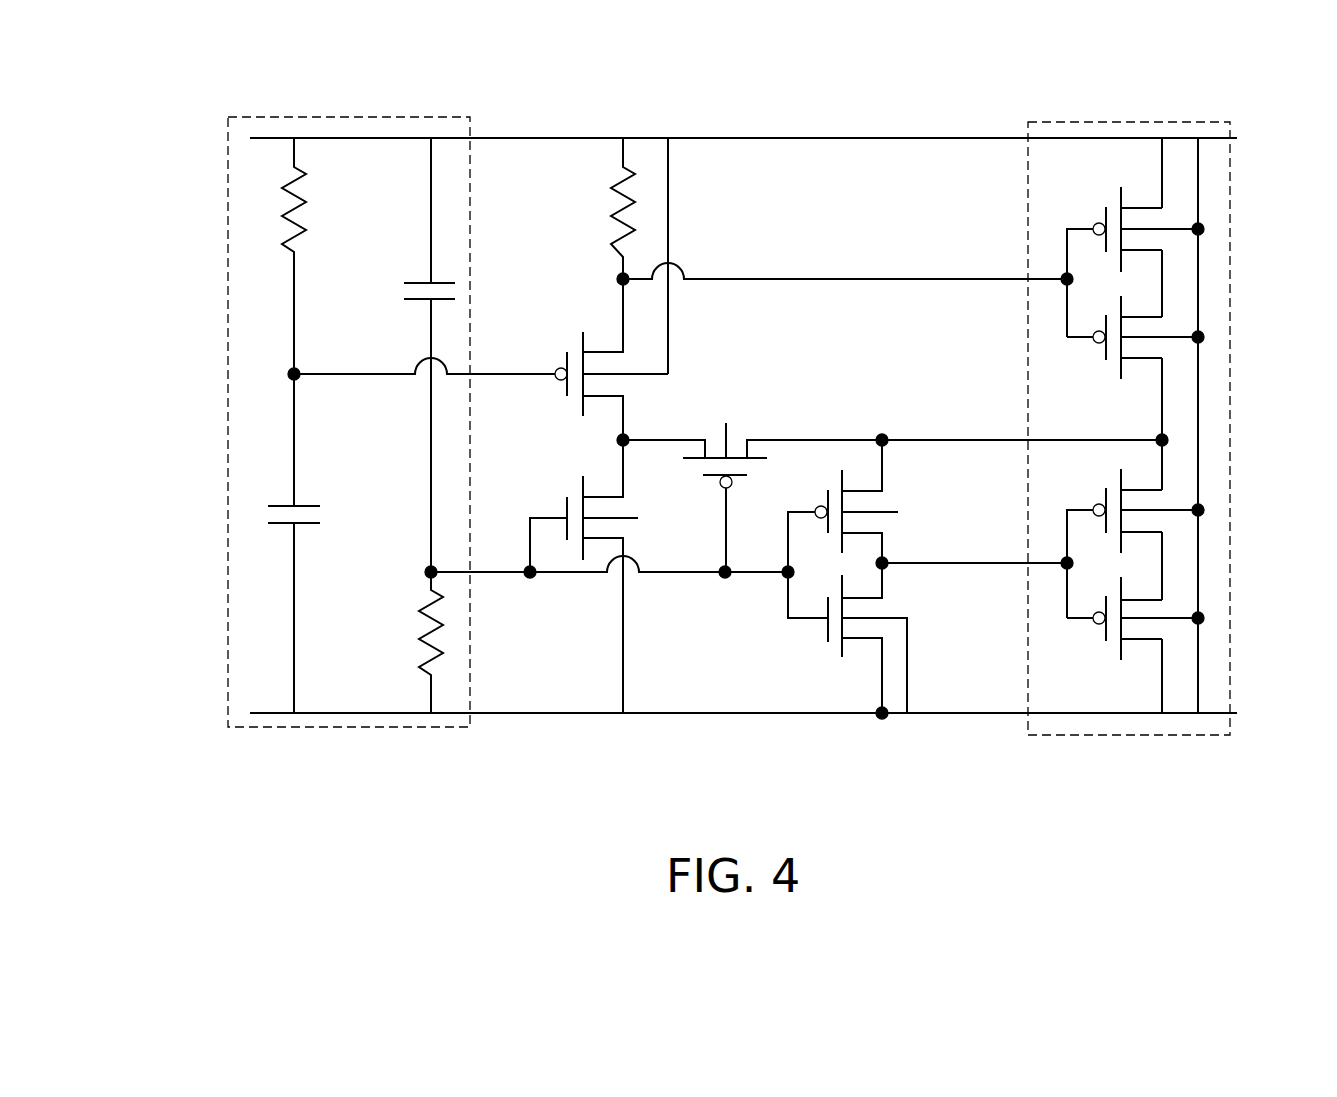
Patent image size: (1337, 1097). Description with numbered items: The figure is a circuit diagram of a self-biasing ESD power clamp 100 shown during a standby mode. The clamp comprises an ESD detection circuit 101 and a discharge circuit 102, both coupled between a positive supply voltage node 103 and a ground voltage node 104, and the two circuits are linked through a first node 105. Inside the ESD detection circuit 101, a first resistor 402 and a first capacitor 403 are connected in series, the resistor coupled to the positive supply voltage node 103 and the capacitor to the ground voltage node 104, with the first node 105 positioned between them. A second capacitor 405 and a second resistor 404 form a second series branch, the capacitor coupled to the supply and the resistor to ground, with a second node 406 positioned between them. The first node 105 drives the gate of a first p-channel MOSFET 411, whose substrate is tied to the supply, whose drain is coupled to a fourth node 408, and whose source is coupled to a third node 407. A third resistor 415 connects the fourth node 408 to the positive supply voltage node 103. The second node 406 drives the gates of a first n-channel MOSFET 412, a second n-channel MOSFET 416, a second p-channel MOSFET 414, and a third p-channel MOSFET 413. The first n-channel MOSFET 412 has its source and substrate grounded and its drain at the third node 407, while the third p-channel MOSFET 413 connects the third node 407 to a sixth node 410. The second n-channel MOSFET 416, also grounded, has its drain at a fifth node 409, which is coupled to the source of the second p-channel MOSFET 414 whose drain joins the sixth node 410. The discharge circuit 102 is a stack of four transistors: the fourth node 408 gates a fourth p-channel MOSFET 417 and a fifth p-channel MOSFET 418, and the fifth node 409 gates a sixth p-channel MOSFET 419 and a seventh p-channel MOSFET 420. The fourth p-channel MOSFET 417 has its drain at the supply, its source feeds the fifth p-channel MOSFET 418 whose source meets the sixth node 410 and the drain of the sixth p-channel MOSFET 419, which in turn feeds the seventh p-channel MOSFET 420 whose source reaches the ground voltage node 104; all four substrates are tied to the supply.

The self-biasing ESD power clamp 100 is at (1145, 57).
The ESD detection circuit 101 is at (228, 278).
The discharge circuit 102 is at (1236, 346).
The positive supply voltage node 103 is at (658, 131).
The ground voltage node 104 is at (778, 722).
The first node 105 is at (285, 372).
The first resistor R1 402 is at (272, 205).
The first capacitor C1 403 is at (258, 494).
The second resistor R2 404 is at (410, 655).
The second capacitor C2 405 is at (380, 265).
The second node 406 is at (420, 548).
The third node 407 is at (632, 428).
The fourth node 408 is at (632, 268).
The fifth node 409 is at (885, 553).
The sixth node 410 is at (878, 428).
The first p-channel MOSFET 411 is at (560, 360).
The first n-channel MOSFET 412 is at (562, 502).
The third p-channel MOSFET 413 is at (742, 428).
The second p-channel MOSFET 414 is at (885, 498).
The third resistor R3 415 is at (596, 190).
The second n-channel MOSFET 416 is at (812, 657).
The fourth p-channel MOSFET 417 is at (1112, 198).
The fifth p-channel MOSFET 418 is at (1093, 325).
The sixth p-channel MOSFET 419 is at (1090, 500).
The seventh p-channel MOSFET 420 is at (1090, 605).